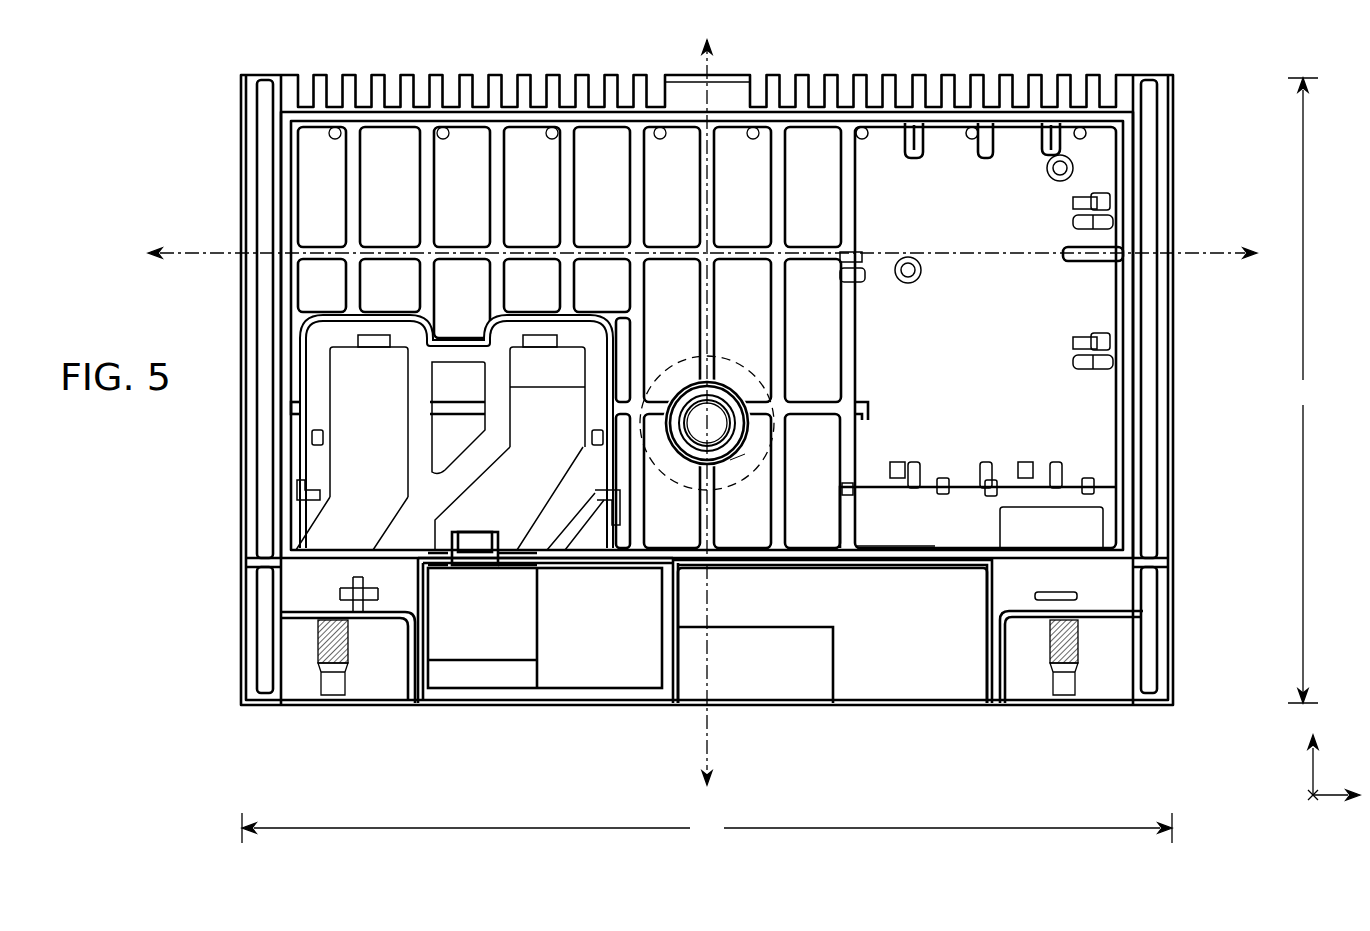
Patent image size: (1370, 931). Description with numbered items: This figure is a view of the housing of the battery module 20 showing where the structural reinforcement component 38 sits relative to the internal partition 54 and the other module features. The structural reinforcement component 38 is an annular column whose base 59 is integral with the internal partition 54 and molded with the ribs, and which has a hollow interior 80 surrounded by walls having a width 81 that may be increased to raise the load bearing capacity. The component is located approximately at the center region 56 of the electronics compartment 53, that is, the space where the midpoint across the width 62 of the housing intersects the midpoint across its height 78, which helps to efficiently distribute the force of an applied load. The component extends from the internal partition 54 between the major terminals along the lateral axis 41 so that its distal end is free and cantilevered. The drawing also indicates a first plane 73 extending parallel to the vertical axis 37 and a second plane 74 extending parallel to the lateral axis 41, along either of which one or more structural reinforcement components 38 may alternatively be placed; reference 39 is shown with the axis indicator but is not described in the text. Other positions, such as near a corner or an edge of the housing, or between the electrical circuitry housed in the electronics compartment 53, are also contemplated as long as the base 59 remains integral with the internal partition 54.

The battery module 20 is at (186, 104).
The electronics compartment 53 is at (943, 196).
The internal partition 54 is at (686, 180).
The second plane 74 is at (1211, 252).
The first plane 73 is at (707, 735).
The height 78 is at (1303, 390).
The width 62 is at (707, 828).
The base 59 is at (688, 391).
The center region 56 is at (742, 352).
The hollow interior 80 is at (733, 393).
The width of the walls 81 is at (742, 452).
The structural reinforcement component 38 is at (733, 465).
The vertical axis 37 is at (1313, 765).
The origin 39 is at (1313, 797).
The lateral axis 41 is at (1338, 796).